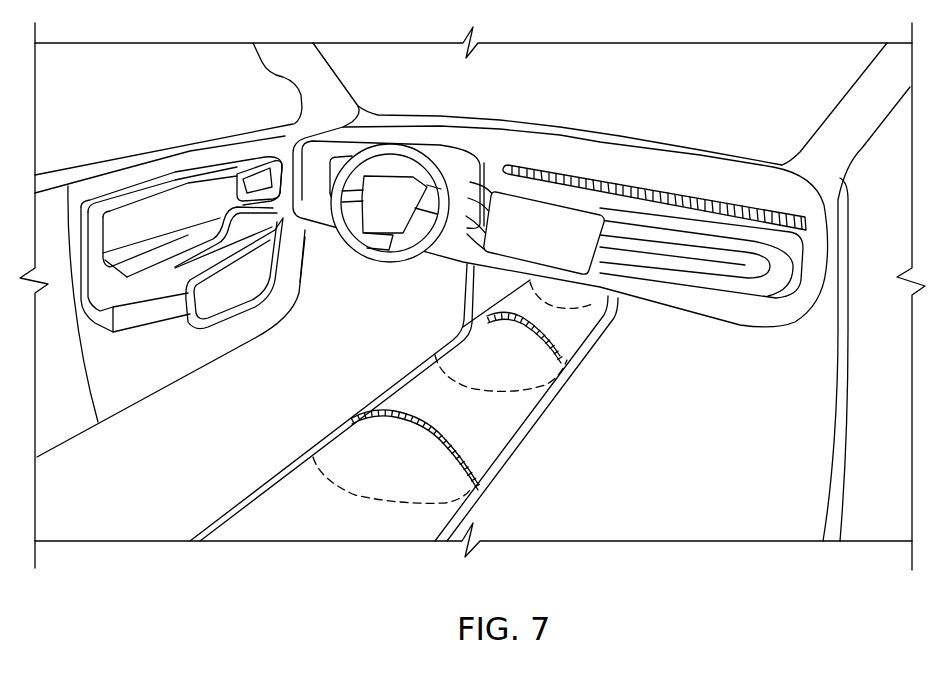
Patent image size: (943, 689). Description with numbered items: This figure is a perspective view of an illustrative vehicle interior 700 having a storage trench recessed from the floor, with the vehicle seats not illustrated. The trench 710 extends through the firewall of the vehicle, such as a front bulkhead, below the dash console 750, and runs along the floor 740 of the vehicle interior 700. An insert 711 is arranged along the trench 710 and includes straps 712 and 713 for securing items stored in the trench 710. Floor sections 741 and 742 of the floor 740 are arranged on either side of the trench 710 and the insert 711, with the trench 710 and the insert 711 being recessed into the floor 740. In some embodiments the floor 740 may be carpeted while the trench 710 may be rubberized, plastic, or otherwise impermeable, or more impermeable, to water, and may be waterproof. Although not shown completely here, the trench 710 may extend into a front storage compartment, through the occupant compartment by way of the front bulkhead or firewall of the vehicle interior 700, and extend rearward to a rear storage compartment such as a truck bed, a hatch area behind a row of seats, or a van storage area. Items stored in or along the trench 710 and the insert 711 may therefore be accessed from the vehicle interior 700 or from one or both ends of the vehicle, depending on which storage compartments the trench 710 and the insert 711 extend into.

The vehicle interior 700 is at (98, 72).
The trench 710 is at (248, 492).
The insert 711 is at (523, 370).
The strap 712 is at (476, 468).
The strap 713 is at (548, 365).
The floor 740 is at (618, 377).
The floor section 741 is at (306, 388).
The floor section 742 is at (683, 458).
The dash console 750 is at (628, 177).